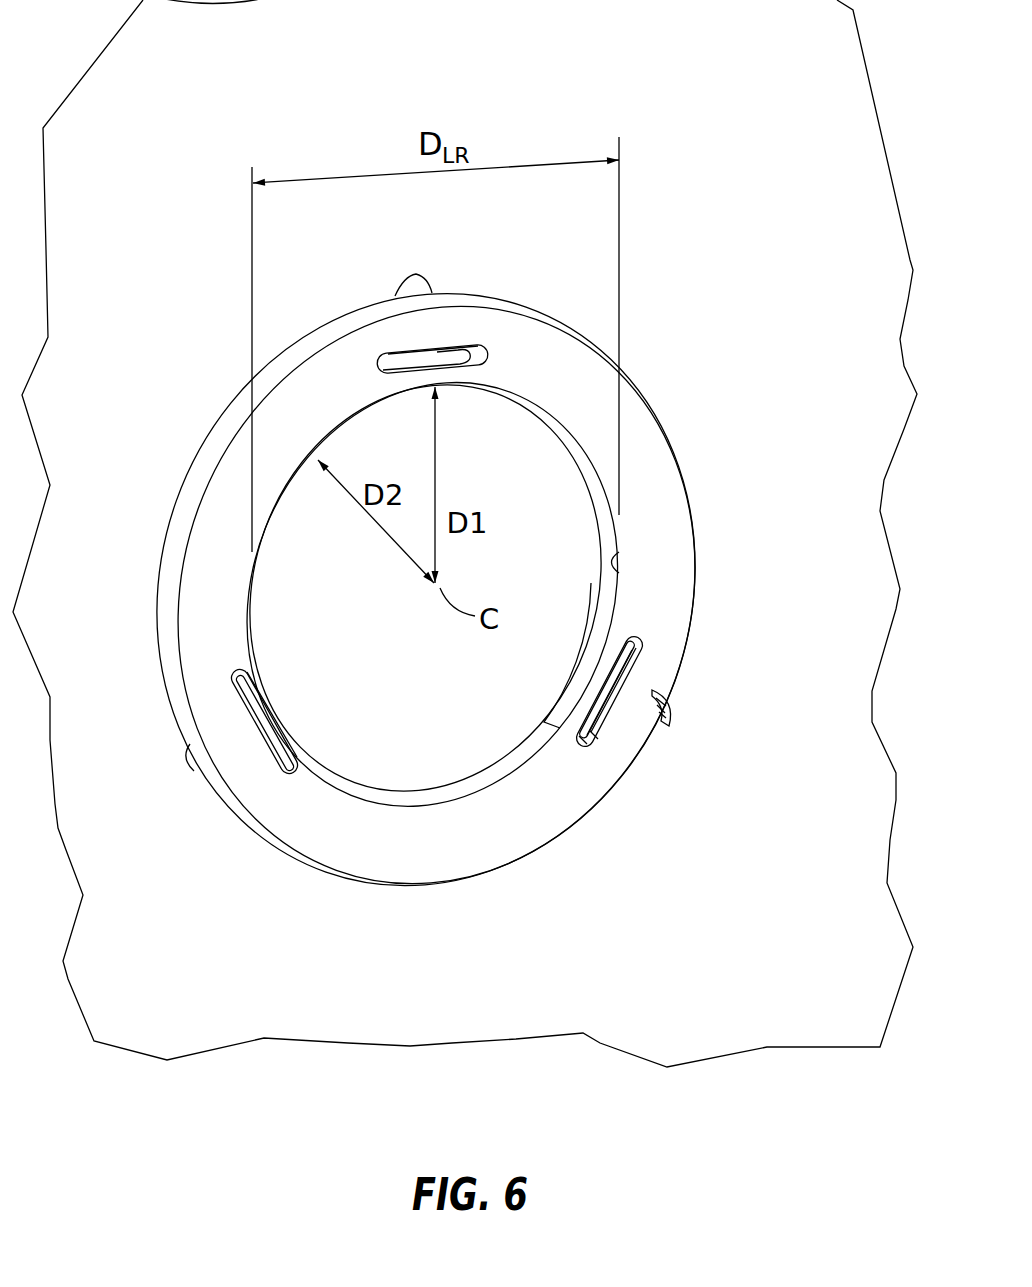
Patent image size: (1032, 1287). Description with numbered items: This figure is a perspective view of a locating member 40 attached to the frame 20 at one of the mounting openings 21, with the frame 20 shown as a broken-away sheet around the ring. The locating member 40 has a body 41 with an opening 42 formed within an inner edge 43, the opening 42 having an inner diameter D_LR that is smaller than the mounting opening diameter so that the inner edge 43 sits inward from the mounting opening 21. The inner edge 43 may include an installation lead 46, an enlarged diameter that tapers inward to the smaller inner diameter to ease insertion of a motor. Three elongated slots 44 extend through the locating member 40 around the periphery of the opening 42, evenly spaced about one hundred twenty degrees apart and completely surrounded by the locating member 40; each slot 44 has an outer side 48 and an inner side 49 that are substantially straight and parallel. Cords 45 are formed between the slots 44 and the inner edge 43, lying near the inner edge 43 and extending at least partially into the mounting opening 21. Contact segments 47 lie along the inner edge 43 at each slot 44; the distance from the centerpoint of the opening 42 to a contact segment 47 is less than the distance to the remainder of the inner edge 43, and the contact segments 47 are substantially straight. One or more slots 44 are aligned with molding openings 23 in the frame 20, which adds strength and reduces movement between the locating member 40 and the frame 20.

The frame 20 is at (703, 1017).
The mounting opening 21 is at (400, 762).
The molding opening 23 is at (398, 287).
The locating member 40 is at (278, 913).
The body 41 is at (455, 855).
The opening 42 is at (543, 482).
The inner edge 43 is at (530, 762).
The slot 44 is at (462, 350).
The cord 45 is at (444, 380).
The installation lead 46 is at (618, 542).
The contact segment 47 is at (444, 379).
The outer side 48 is at (600, 723).
The inner side 49 is at (598, 705).